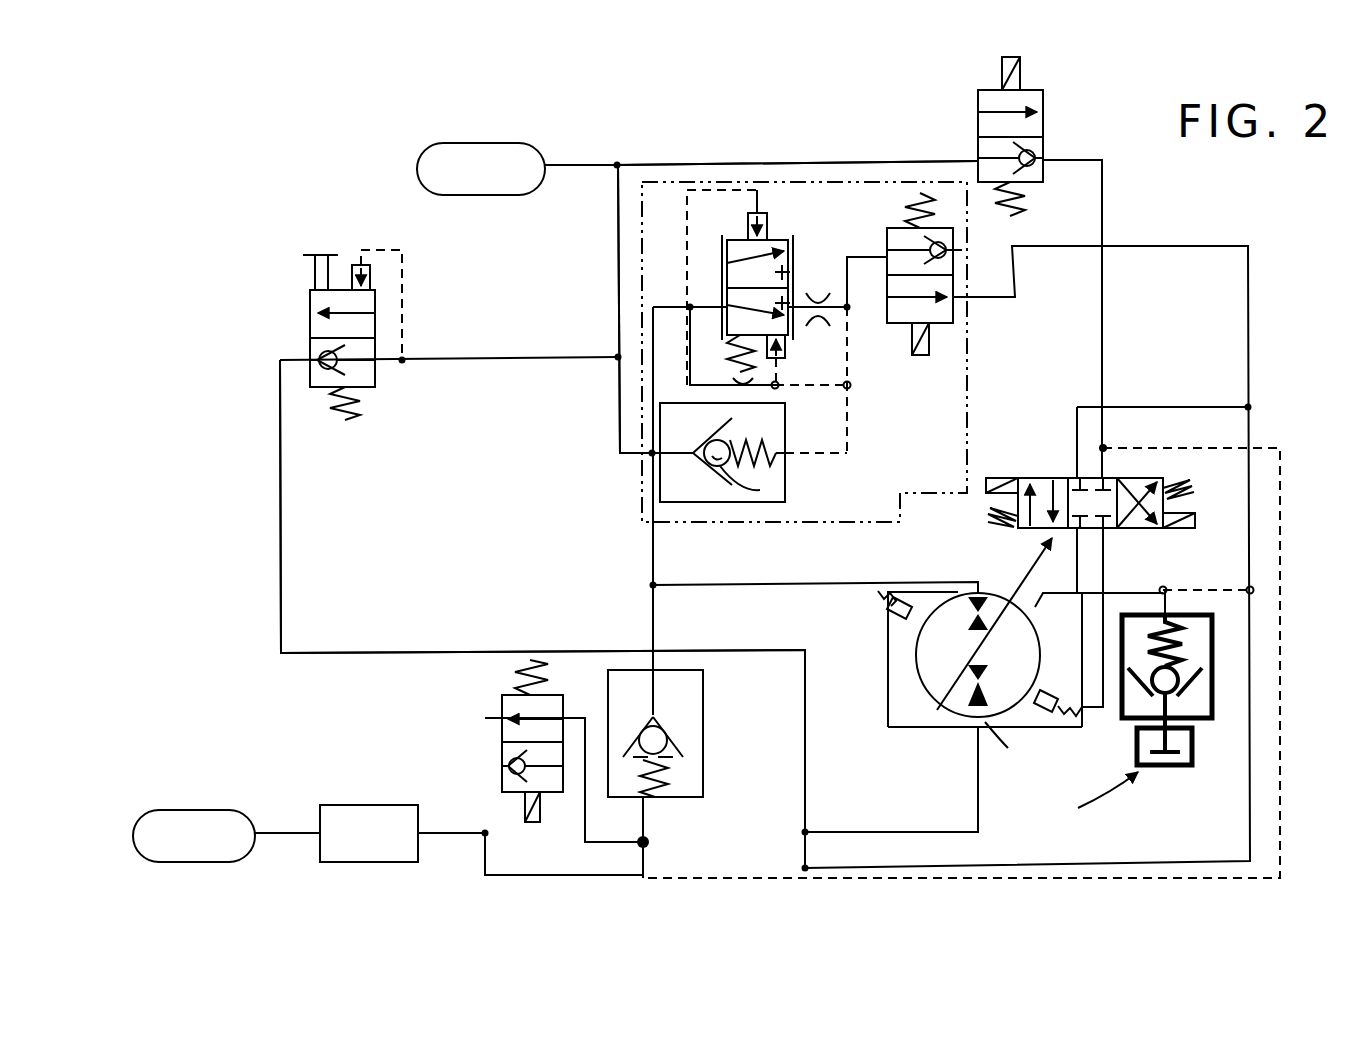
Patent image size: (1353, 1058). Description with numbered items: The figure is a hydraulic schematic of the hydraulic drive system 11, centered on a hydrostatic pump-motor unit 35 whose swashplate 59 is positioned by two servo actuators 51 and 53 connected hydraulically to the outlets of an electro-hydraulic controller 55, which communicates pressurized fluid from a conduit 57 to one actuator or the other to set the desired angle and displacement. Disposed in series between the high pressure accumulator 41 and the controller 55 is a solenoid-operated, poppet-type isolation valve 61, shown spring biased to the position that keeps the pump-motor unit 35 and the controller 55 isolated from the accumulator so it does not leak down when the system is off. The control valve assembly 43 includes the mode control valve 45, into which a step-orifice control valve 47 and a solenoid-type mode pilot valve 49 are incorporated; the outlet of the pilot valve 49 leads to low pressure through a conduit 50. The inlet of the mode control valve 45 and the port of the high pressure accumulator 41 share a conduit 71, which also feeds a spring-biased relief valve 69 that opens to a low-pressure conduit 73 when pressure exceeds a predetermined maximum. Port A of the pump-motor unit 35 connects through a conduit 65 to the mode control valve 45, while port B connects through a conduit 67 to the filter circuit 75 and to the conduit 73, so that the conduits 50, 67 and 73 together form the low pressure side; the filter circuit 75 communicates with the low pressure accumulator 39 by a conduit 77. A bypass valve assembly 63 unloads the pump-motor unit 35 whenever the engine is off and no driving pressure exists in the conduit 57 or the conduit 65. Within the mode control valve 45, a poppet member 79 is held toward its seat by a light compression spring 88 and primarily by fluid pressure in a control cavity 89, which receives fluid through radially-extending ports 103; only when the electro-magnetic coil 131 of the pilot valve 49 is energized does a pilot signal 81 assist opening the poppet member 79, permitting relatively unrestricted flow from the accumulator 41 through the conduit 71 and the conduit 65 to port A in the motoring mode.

The hydraulic drive system 11 is at (383, 122).
The hydrostatic pump-motor unit 35 is at (950, 566).
The low pressure accumulator 39 is at (226, 760).
The high pressure accumulator 41 is at (462, 196).
The control valve assembly 43 is at (637, 474).
The mode control valve 45 is at (714, 512).
The step-orifice control valve 47 is at (790, 235).
The mode pilot valve 49 is at (946, 332).
The conduit 50 is at (1196, 200).
The servo actuator 51 is at (1045, 645).
The servo actuator 53 is at (905, 612).
The electro-hydraulic controller 55 is at (1044, 472).
The conduit 57 is at (648, 163).
The swashplate 59 is at (1035, 563).
The isolation valve 61 is at (978, 116).
The bypass valve assembly 63 is at (712, 757).
The conduit 65 is at (810, 585).
The conduit 67 is at (915, 830).
The relief valve 69 is at (290, 297).
The conduit 71 is at (618, 310).
The conduit 73 is at (283, 545).
The filter circuit 75 is at (398, 800).
The conduit 77 is at (285, 833).
The poppet member 79 is at (760, 490).
The pilot signal 81 is at (850, 430).
The compression spring 88 is at (775, 465).
The control cavity 89 is at (776, 440).
The radially-extending ports 103 is at (818, 290).
The electro-magnetic coil 131 is at (918, 355).